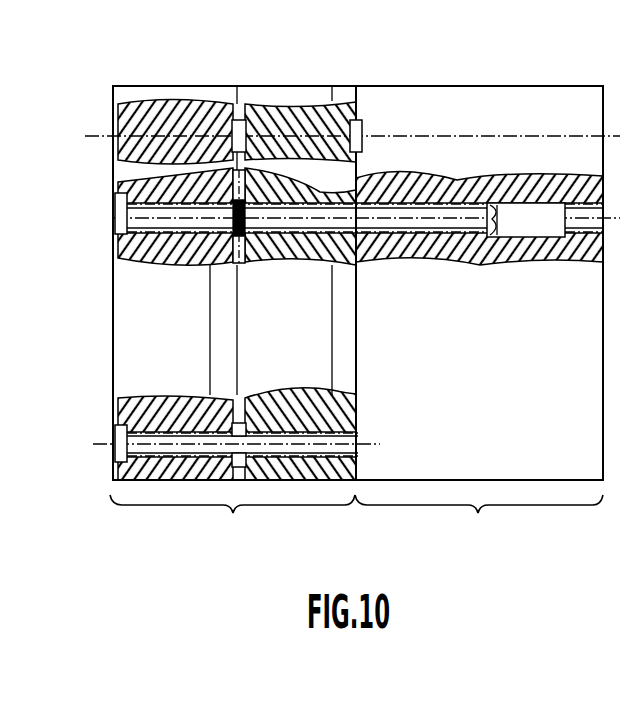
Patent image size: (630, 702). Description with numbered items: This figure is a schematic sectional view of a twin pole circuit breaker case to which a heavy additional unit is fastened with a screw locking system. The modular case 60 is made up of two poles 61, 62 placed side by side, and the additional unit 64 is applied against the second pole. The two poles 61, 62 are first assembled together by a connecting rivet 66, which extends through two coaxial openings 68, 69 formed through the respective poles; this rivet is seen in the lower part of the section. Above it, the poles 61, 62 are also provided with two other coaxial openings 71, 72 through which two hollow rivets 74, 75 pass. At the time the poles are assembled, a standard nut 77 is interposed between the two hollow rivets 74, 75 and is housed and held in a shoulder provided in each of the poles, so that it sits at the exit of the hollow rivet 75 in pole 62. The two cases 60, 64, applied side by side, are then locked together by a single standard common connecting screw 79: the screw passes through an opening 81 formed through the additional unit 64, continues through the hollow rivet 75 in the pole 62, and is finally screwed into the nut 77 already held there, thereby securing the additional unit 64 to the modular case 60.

The modular case 60 is at (232, 523).
The pole 61 is at (177, 281).
The pole 62 is at (300, 281).
The additional unit 64 is at (479, 524).
The connecting rivet 66 is at (125, 437).
The coaxial opening 68 is at (115, 456).
The coaxial opening 69 is at (356, 441).
The coaxial opening 71 is at (147, 257).
The coaxial opening 72 is at (316, 217).
The hollow rivet 74 is at (127, 212).
The hollow rivet 75 is at (287, 216).
The standard nut 77 is at (235, 243).
The common connecting screw 79 is at (411, 222).
The opening 81 is at (520, 222).